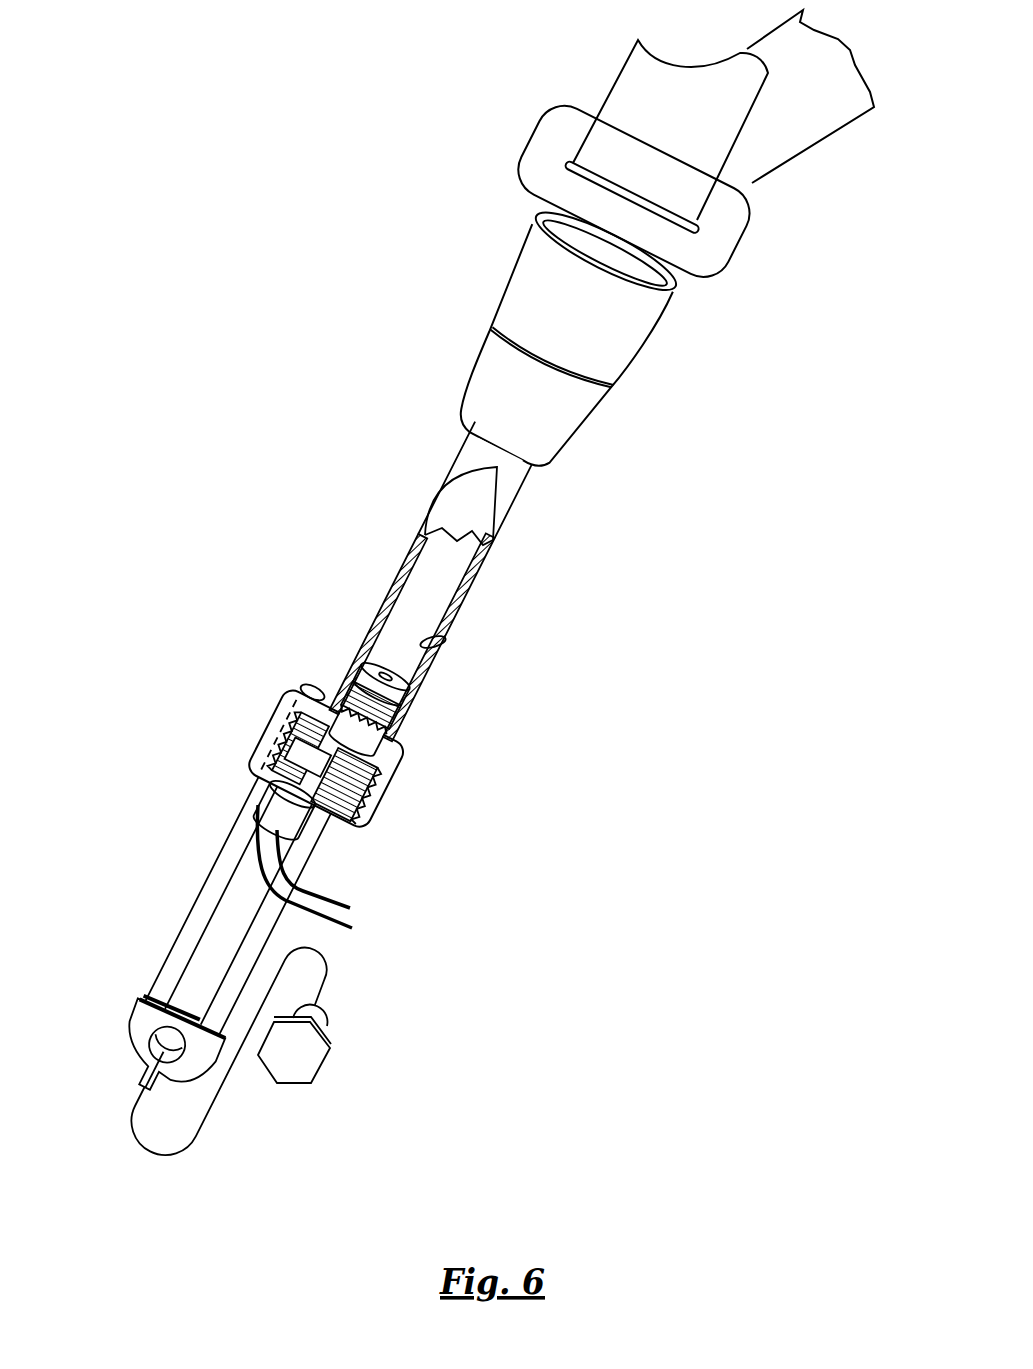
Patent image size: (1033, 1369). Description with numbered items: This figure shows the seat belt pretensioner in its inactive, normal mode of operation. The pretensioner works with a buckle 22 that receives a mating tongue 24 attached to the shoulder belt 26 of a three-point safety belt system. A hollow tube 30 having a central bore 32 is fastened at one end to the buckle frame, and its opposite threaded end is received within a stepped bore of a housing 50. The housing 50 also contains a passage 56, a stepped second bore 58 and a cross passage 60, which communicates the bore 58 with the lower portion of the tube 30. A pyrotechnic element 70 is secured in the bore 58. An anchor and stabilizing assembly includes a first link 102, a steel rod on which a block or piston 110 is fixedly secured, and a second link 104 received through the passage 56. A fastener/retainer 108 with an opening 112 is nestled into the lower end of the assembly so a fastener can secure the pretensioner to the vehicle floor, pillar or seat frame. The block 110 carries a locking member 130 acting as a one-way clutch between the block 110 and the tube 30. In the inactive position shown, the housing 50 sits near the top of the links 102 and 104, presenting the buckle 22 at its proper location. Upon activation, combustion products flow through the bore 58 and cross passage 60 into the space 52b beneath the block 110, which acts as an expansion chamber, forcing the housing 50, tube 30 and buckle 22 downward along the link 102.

The buckle 22 is at (490, 305).
The tongue 24 is at (525, 125).
The shoulder belt 26 is at (627, 90).
The hollow tube 30 is at (398, 563).
The central bore 32 is at (437, 660).
The housing 50 is at (253, 737).
The space 52b is at (393, 773).
The passage 56 is at (272, 725).
The stepped second bore 58 is at (303, 687).
The cross passage 60 is at (333, 827).
The pyrotechnic element 70 is at (280, 800).
The first link 102 is at (267, 927).
The second link 104 is at (210, 887).
The fastener/retainer 108 is at (137, 1018).
The block or piston 110 is at (375, 735).
The opening 112 is at (290, 1062).
The locking member 130 is at (405, 712).